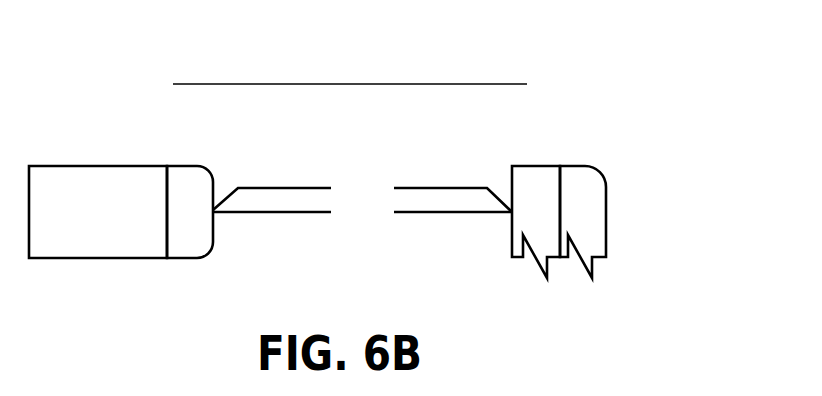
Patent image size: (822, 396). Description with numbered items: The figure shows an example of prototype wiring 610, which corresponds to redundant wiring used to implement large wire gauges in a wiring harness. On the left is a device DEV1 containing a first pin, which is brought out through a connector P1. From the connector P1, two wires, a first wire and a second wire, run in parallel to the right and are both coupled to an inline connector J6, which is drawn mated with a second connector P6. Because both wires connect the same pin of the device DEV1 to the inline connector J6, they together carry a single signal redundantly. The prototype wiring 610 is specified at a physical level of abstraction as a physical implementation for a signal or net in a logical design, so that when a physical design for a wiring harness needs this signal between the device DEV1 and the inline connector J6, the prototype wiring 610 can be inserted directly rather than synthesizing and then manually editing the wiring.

The prototype wiring 610 is at (761, 107).
The device DEV1 is at (98, 233).
The connector P1 is at (193, 230).
The inline connector J6 is at (521, 224).
The plug P6 is at (602, 224).